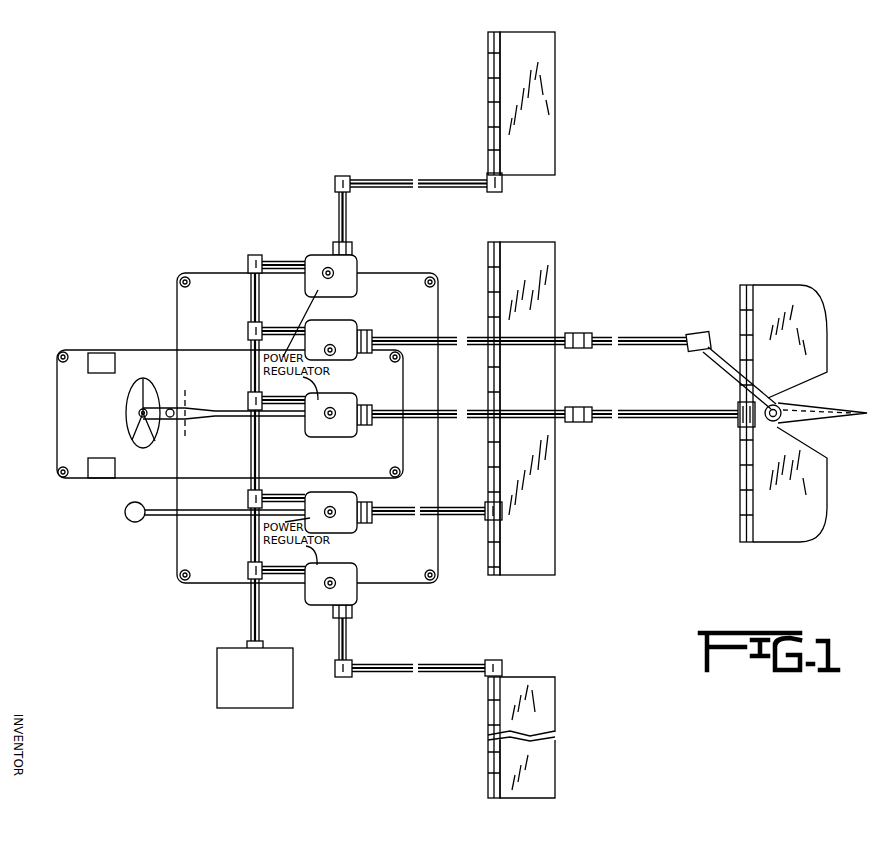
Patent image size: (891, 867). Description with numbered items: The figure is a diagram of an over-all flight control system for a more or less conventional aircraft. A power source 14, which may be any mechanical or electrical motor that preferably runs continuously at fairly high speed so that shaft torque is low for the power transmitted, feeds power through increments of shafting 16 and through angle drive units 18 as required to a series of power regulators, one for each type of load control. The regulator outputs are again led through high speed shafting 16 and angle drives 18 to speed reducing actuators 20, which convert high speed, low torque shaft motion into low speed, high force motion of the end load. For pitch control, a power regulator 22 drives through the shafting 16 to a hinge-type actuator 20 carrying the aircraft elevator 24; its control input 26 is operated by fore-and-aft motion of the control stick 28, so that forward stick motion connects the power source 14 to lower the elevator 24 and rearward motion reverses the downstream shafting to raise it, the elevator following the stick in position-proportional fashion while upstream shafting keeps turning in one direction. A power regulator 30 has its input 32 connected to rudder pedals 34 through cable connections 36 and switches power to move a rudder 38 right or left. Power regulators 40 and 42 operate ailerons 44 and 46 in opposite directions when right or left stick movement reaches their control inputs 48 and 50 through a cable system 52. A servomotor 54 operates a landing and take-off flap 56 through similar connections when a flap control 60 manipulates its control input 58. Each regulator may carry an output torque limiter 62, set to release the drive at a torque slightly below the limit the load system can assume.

The power source 14 is at (248, 710).
The shafting 16 is at (395, 182).
The angle drive units 18 is at (352, 178).
The speed reducing actuators 20 is at (488, 82).
The power regulator 22 is at (357, 395).
The aircraft elevator 24 is at (790, 286).
The control input 26 is at (333, 408).
The control stick 28 is at (168, 368).
The power regulator 30 is at (350, 322).
The control input 32 is at (333, 345).
The rudder pedals 34 is at (100, 353).
The cable connections 36 is at (57, 400).
The rudder 38 is at (815, 408).
The power regulator 40 is at (358, 264).
The power regulator 42 is at (358, 568).
The aileron 44 is at (556, 122).
The aileron 46 is at (528, 677).
The control input 48 is at (326, 268).
The control input 50 is at (333, 578).
The cable system 52 is at (407, 274).
The servomotor 54 is at (338, 492).
The landing and take-off flap 56 is at (556, 500).
The control input 58 is at (336, 511).
The flap control 60 is at (134, 522).
The output torque limiter 62 is at (353, 250).